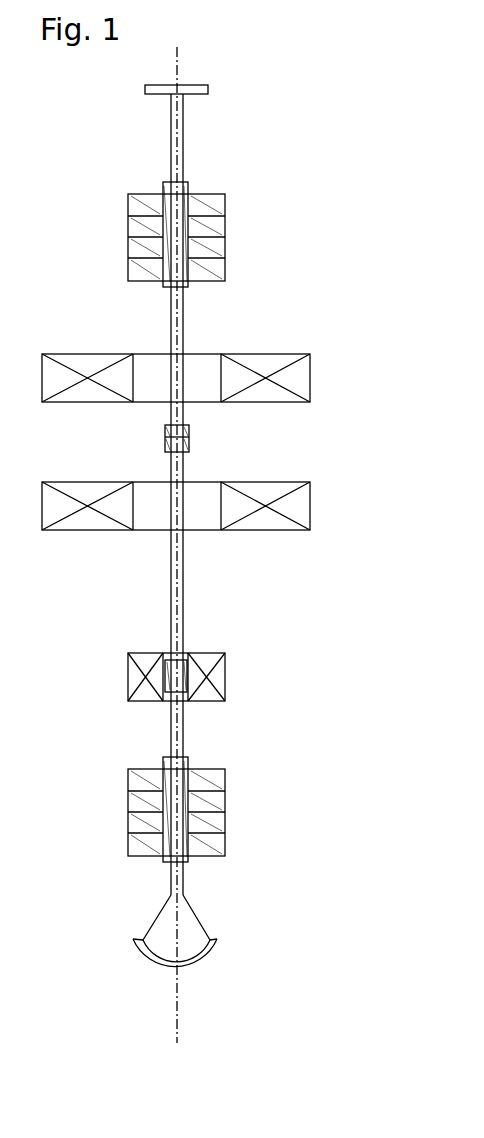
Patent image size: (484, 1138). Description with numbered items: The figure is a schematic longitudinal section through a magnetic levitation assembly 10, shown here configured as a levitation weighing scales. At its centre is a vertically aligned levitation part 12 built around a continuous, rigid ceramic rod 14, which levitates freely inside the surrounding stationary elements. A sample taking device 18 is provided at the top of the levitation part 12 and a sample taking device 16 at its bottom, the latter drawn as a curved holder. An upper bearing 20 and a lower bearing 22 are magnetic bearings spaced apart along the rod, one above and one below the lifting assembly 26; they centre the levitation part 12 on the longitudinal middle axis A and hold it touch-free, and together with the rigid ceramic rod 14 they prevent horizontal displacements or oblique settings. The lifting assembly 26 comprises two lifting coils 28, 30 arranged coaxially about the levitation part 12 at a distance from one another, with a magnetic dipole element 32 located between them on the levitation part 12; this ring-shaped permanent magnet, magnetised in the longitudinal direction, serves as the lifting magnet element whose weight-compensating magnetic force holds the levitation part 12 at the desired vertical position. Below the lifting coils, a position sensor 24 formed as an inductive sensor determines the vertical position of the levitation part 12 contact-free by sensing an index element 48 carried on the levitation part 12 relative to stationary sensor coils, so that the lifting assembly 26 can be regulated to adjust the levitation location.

The magnetic levitation assembly 10 is at (268, 182).
The levitation part 12 is at (225, 312).
The ceramic rod 14 is at (171, 140).
The sample taking device 16 is at (215, 948).
The sample taking device 18 is at (191, 85).
The upper bearing 20 is at (107, 231).
The lower bearing 22 is at (103, 805).
The position sensor 24 is at (255, 675).
The lifting assembly 26 is at (302, 422).
The lifting coil 28 is at (73, 518).
The lifting coil 30 is at (82, 367).
The magnetic dipole element 32 is at (189, 437).
The index element 48 is at (186, 653).
The axis A is at (177, 1015).